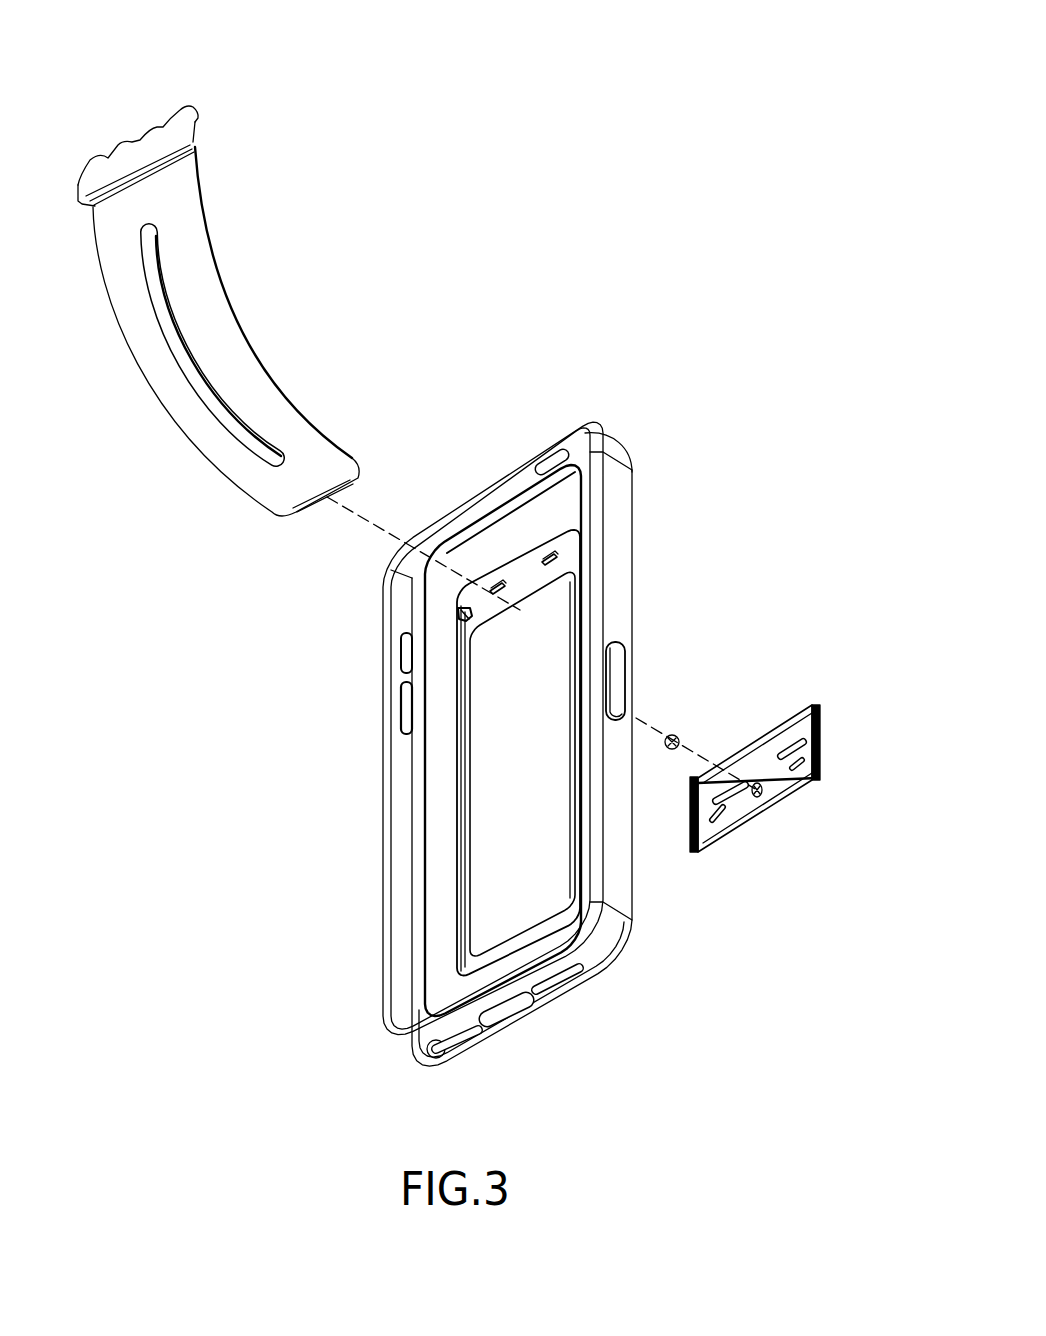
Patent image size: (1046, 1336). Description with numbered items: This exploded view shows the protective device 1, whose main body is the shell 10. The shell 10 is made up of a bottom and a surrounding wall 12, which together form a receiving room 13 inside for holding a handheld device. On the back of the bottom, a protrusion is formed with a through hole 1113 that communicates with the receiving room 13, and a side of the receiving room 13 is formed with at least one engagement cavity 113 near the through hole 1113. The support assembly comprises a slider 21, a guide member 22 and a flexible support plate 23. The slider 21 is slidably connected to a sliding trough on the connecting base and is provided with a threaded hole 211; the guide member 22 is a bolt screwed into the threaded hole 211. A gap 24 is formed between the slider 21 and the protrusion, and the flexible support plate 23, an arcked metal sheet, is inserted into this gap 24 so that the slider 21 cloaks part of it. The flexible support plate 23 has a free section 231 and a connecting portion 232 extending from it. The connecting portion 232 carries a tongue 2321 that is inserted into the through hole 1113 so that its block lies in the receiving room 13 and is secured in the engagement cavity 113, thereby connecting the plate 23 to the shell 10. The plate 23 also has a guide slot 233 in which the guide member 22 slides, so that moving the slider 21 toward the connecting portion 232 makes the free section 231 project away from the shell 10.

The protective case assembly 1 is at (573, 197).
The shell 10 is at (702, 389).
The surrounding wall 12 is at (618, 492).
The receiving room 13 is at (442, 812).
The engagement cavity 113 is at (493, 588).
The through hole 1113 is at (463, 614).
The slider 21 is at (733, 705).
The threaded hole 211 is at (755, 798).
The guide member 22 is at (672, 735).
The flexible support plate 23 is at (276, 230).
The free section 231 is at (240, 306).
The connecting portion 232 is at (207, 135).
The tongue 2321 is at (140, 143).
The guide slot 233 is at (268, 450).
The gap 24 is at (762, 733).